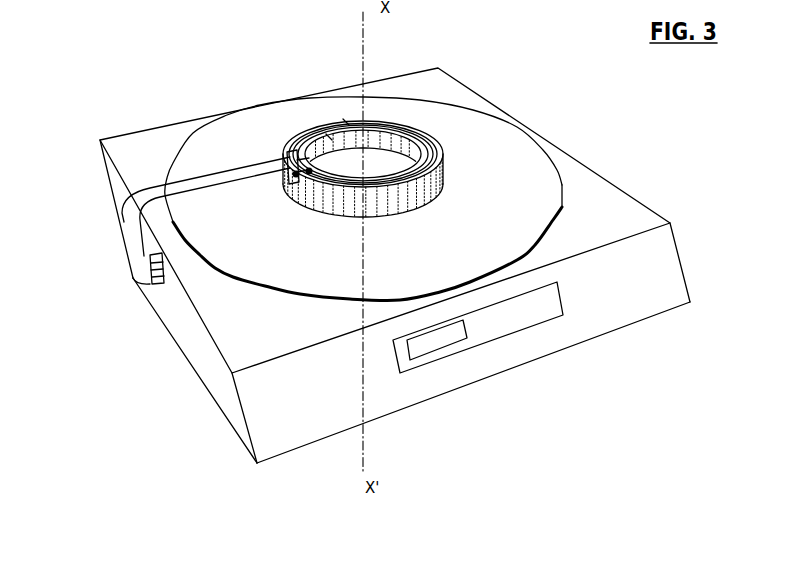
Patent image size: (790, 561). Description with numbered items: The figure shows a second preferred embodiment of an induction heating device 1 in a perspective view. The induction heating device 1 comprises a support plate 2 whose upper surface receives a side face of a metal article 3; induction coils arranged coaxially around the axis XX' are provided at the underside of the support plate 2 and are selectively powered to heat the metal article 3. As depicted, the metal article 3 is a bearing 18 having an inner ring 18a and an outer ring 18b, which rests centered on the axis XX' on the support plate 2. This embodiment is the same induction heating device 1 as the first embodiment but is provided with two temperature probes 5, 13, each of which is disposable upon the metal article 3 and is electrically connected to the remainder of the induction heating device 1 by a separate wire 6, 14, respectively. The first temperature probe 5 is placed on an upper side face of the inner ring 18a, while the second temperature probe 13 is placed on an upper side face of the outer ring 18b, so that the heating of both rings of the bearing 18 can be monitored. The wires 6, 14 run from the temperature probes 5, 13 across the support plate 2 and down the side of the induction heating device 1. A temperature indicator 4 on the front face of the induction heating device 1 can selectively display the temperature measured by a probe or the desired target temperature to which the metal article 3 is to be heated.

The induction heating device 1 is at (230, 322).
The support plate 2 is at (530, 177).
The metal article 3 is at (437, 133).
The temperature indicator 4 is at (453, 347).
The temperature probe 5 is at (293, 157).
The wire 6 is at (163, 252).
The temperature probe 13 is at (287, 168).
The wire 14 is at (222, 184).
The bearing 18 is at (445, 162).
The inner ring 18a is at (329, 137).
The outer ring 18b is at (346, 122).